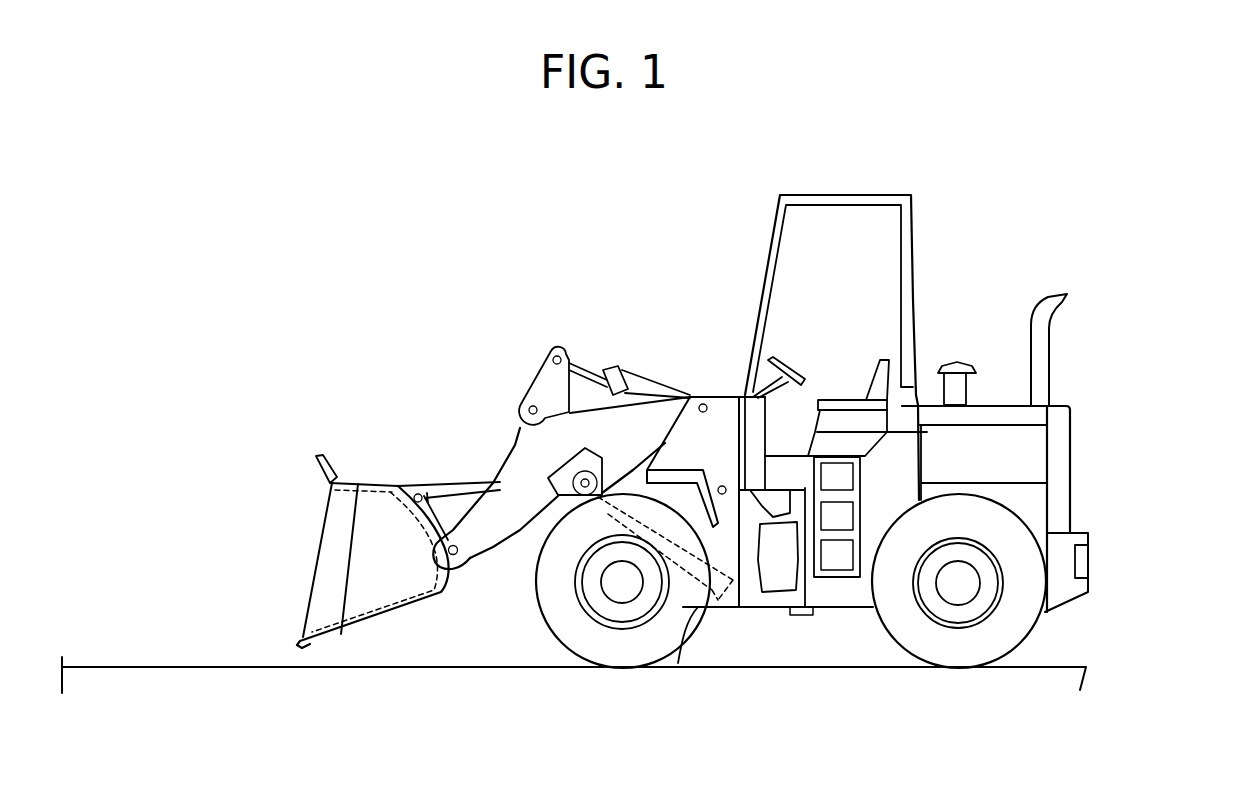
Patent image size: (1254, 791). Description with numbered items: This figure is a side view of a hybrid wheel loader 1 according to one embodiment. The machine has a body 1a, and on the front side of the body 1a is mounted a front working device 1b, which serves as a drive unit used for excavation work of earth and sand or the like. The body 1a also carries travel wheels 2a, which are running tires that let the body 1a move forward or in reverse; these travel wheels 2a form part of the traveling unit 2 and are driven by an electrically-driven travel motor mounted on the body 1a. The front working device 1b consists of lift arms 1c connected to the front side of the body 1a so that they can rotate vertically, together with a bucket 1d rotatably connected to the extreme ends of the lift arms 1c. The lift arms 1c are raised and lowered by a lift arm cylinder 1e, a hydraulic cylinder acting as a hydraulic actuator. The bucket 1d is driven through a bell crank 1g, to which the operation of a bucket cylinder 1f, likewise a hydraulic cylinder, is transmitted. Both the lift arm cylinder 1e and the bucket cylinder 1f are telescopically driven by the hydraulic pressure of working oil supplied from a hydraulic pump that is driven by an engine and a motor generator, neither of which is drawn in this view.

The hybrid wheel loader 1 is at (1082, 424).
The body 1a is at (1073, 497).
The front working device 1b is at (510, 457).
The lift arms 1c is at (587, 418).
The bucket 1d is at (360, 478).
The lift arm cylinder 1e is at (676, 562).
The bucket cylinder 1f is at (633, 377).
The bell crank 1g is at (538, 367).
The traveling unit 2 is at (817, 650).
The travel wheels 2a is at (684, 648).